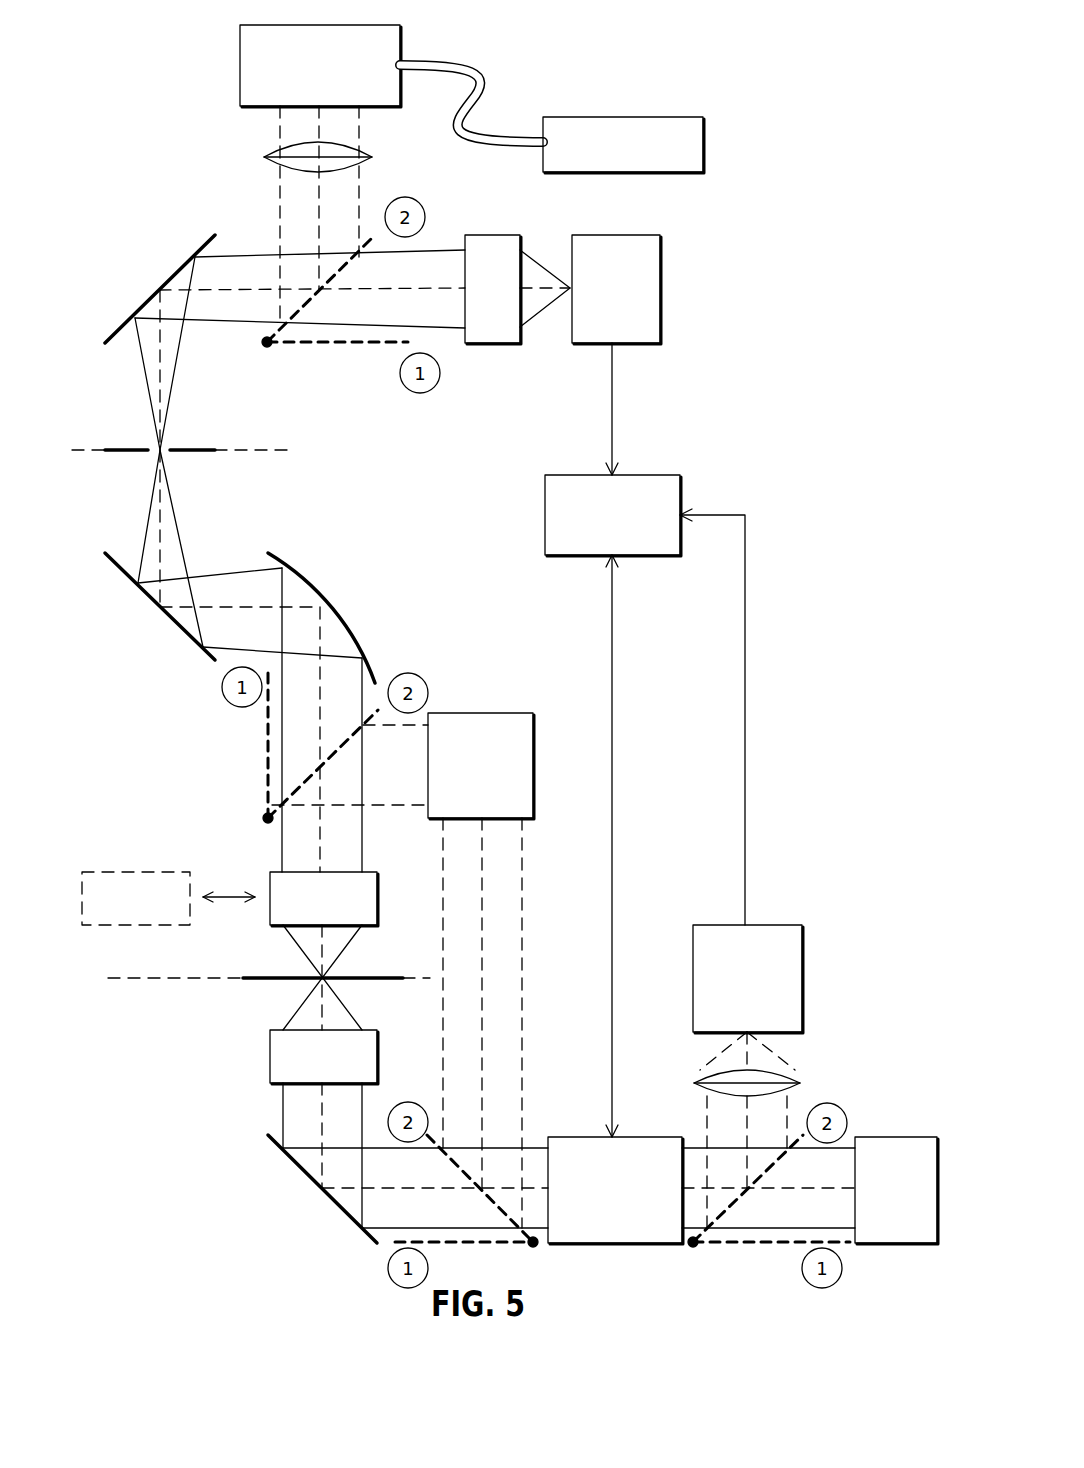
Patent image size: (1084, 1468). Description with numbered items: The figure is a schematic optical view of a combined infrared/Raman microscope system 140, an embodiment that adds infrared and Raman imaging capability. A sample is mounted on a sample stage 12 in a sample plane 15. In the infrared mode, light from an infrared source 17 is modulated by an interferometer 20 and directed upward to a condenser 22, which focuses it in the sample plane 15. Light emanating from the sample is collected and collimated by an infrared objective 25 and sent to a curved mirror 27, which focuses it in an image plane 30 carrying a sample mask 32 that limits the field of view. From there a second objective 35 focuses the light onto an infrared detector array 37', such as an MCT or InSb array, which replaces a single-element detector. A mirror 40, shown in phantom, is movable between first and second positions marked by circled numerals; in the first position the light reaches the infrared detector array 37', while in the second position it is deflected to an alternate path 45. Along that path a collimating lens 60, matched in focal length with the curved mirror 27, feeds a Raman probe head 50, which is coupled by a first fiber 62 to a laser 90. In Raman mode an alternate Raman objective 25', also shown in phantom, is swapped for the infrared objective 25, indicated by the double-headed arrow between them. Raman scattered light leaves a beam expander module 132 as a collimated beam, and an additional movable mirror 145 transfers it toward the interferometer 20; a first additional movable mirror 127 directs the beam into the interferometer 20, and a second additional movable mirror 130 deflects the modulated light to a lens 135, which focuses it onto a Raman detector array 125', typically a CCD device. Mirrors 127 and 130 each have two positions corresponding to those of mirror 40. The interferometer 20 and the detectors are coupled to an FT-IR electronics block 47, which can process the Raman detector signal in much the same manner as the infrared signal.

The sample stage 12 is at (323, 965).
The sample plane 15 is at (269, 965).
The infrared source 17 is at (898, 1179).
The interferometer 20 is at (615, 1179).
The condenser 22 is at (337, 1056).
The infrared objective 25 is at (336, 888).
The alternate Raman objective 25' is at (138, 886).
The curved mirror 27 is at (321, 618).
The image plane 30 is at (189, 437).
The sample mask 32 is at (170, 437).
The second objective 35 is at (517, 279).
The infrared detector array 37' is at (620, 279).
The mirror 40 is at (335, 308).
The alternate path 45 is at (319, 214).
The FT-IR electronics block 47 is at (614, 504).
The Raman probe head 50 is at (320, 54).
The collimating lens 60 is at (335, 154).
The first fiber 62 is at (471, 92).
The laser 90 is at (623, 133).
The Raman detector array 125' is at (758, 967).
The first additional movable mirror 127 is at (466, 1205).
The second additional movable mirror 130 is at (769, 1206).
The beam expander module 132 is at (483, 754).
The lens 135 is at (769, 1074).
The combined infrared/Raman microscope system 140 is at (270, 1214).
The additional movable mirror 145 is at (325, 748).